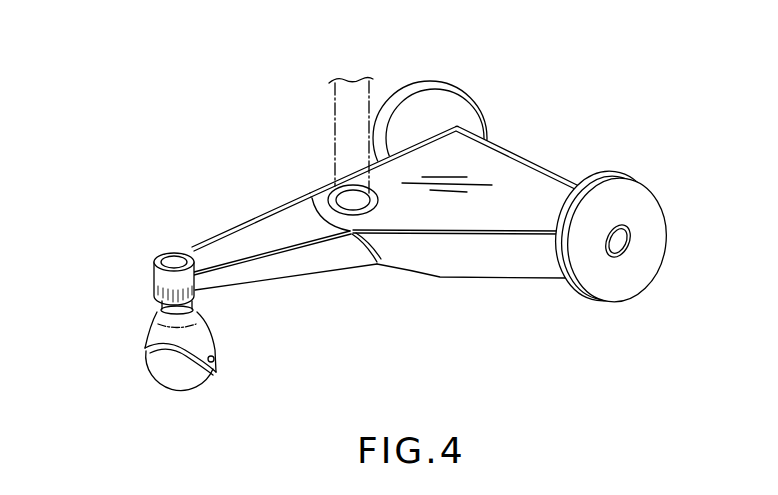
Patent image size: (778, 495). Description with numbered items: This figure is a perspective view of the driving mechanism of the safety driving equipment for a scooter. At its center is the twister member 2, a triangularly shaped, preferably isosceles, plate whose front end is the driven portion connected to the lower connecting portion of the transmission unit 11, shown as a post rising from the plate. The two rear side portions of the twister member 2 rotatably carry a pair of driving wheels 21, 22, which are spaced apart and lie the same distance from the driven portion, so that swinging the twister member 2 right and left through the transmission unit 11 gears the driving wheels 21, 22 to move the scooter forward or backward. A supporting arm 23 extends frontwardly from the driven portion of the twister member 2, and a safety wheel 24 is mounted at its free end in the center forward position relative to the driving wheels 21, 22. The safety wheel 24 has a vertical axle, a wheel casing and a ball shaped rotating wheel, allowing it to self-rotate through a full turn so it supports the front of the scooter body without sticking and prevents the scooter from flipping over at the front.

The twister member 2 is at (417, 253).
The transmission unit 11 is at (353, 130).
The driving wheel 21 is at (648, 218).
The driving wheel 22 is at (445, 110).
The supporting arm 23 is at (273, 226).
The safety wheel 24 is at (157, 328).